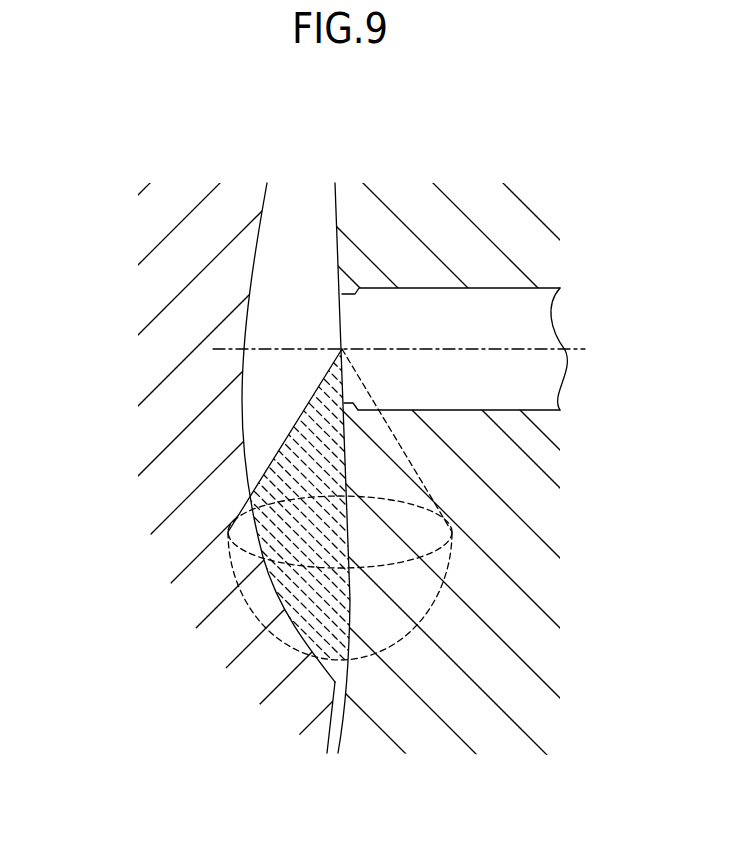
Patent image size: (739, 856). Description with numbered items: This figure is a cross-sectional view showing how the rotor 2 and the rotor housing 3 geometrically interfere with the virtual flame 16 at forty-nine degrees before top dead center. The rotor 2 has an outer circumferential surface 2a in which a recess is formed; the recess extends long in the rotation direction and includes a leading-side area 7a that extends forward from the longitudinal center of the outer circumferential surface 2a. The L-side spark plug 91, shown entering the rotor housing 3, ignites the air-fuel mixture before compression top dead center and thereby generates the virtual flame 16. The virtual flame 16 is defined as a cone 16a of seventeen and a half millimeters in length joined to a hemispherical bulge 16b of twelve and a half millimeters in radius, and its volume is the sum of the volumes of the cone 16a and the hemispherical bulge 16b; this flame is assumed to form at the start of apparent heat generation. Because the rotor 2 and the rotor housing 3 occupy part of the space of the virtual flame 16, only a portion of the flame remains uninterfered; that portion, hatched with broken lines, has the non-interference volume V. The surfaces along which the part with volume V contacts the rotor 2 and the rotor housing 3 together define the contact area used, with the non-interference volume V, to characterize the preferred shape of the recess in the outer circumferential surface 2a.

The rotor 2 is at (203, 228).
The outer circumferential surface 2a is at (339, 725).
The rotor housing 3 is at (417, 212).
The leading-side area 7a is at (302, 212).
The L-side spark plug 91 is at (487, 305).
The virtual flame 16 is at (413, 463).
The cone 16a is at (302, 412).
The hemispherical bulge 16b is at (428, 615).
The non-interference volume V is at (278, 453).